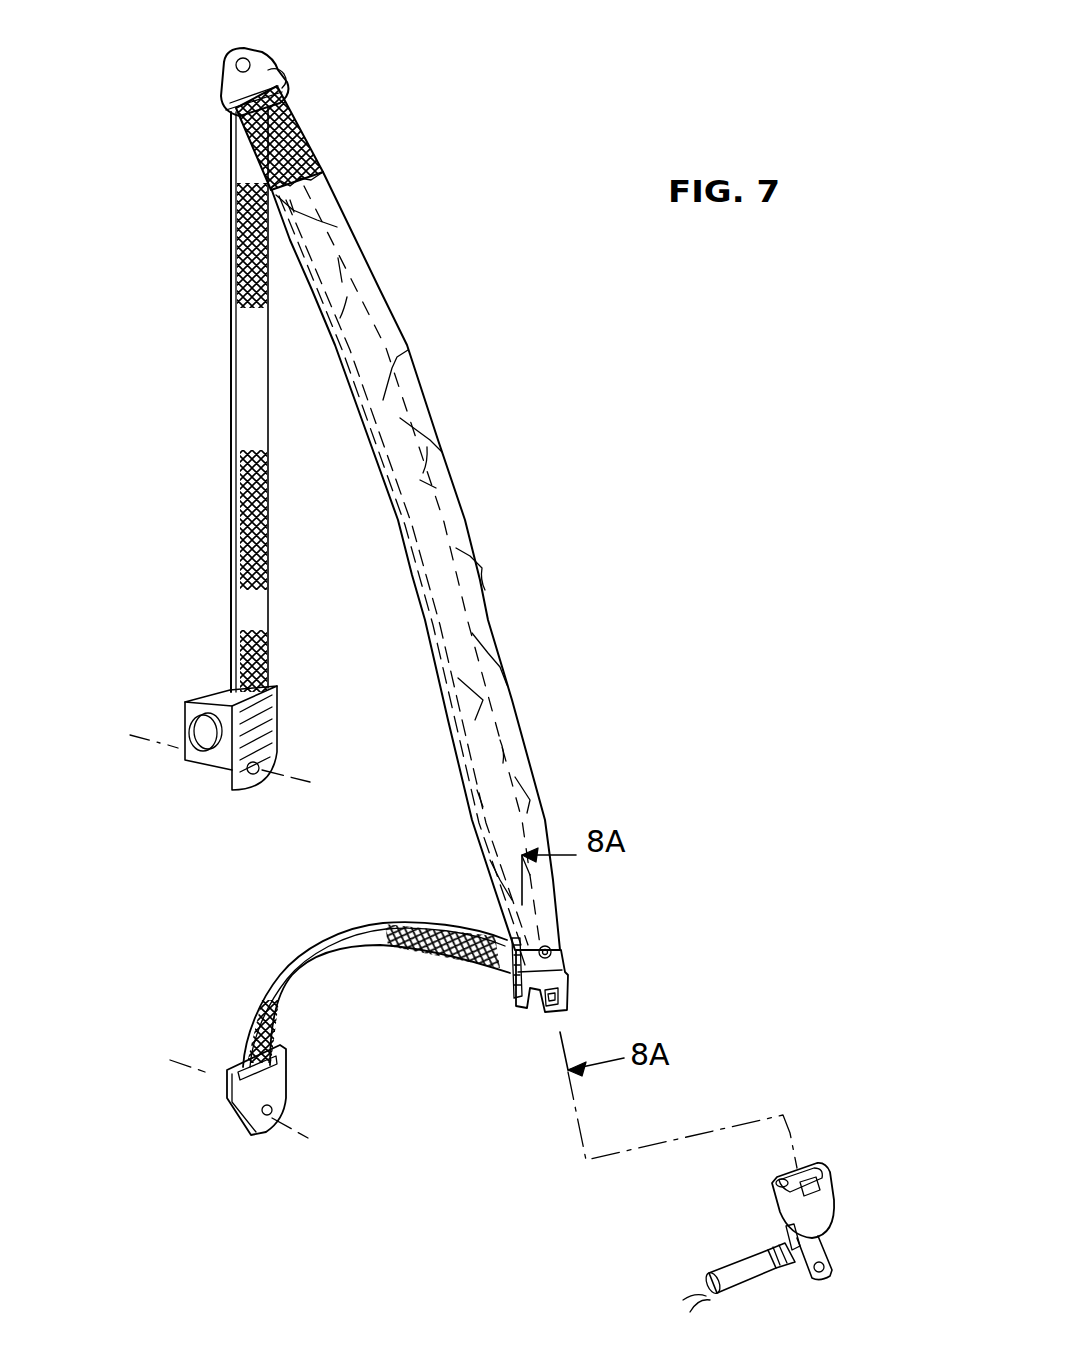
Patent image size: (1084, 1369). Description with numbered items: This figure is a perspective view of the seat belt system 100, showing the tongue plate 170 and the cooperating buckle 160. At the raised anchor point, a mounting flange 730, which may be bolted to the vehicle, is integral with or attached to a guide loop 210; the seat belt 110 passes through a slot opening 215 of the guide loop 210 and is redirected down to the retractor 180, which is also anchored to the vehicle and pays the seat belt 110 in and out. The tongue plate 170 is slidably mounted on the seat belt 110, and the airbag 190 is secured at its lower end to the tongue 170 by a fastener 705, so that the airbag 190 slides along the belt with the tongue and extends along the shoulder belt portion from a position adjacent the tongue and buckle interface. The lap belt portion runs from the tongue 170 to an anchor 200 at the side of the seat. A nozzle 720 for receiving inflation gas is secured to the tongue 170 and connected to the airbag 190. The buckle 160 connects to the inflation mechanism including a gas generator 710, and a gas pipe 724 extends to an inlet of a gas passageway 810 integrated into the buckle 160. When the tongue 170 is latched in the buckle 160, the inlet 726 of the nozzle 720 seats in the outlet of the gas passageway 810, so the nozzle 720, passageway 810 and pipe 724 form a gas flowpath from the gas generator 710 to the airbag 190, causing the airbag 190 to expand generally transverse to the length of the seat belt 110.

The seat belt system 100 is at (447, 335).
The seat belt 110 is at (231, 395).
The buckle 160 is at (826, 1183).
The tongue plate 170 is at (572, 984).
The retractor 180 is at (214, 686).
The airbag 190 is at (470, 528).
The anchor 200 is at (288, 1082).
The guide loop 210 is at (290, 78).
The slot opening 215 is at (268, 70).
The fastener 705 is at (552, 950).
The gas generator 710 is at (743, 1288).
The nozzle 720 is at (516, 982).
The gas pipe 724 is at (790, 1246).
The inlet 726 is at (520, 1000).
The mounting flange 730 is at (236, 50).
The gas passageway 810 is at (788, 1181).